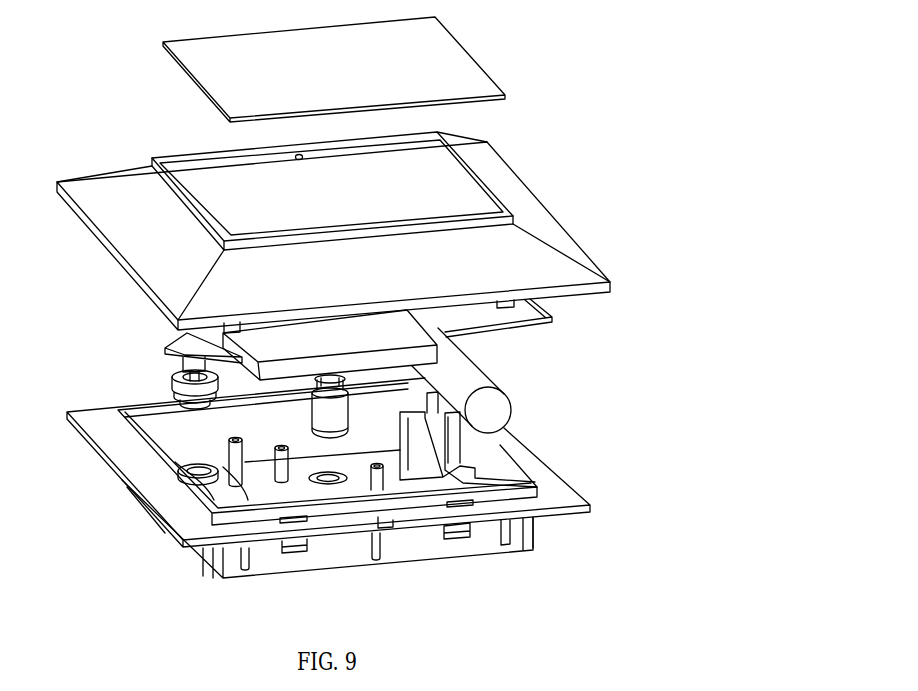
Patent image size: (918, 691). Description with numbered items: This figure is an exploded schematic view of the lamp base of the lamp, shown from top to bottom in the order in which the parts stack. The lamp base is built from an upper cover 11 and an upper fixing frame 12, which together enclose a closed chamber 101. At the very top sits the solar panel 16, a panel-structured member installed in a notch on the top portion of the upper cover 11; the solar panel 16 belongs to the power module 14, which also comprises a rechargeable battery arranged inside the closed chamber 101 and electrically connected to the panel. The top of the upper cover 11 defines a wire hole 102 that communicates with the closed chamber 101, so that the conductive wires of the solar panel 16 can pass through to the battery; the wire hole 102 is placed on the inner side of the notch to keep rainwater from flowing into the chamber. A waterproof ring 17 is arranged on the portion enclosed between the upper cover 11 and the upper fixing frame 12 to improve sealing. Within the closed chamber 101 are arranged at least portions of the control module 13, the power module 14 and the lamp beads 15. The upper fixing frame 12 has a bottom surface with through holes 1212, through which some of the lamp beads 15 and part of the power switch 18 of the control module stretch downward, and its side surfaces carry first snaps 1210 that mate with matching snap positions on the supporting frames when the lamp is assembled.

The upper cover 11 is at (530, 192).
The upper fixing frame 12 is at (182, 532).
The control module 13 is at (166, 334).
The power module 14 is at (497, 408).
The lamp beads 15 is at (322, 418).
The solar panel 16 is at (472, 57).
The waterproof ring 17 is at (545, 318).
The power switch 18 is at (174, 389).
The closed chamber 101 is at (176, 437).
The wire hole 102 is at (292, 153).
The first snaps 1210 is at (455, 539).
The through holes 1212 is at (328, 497).